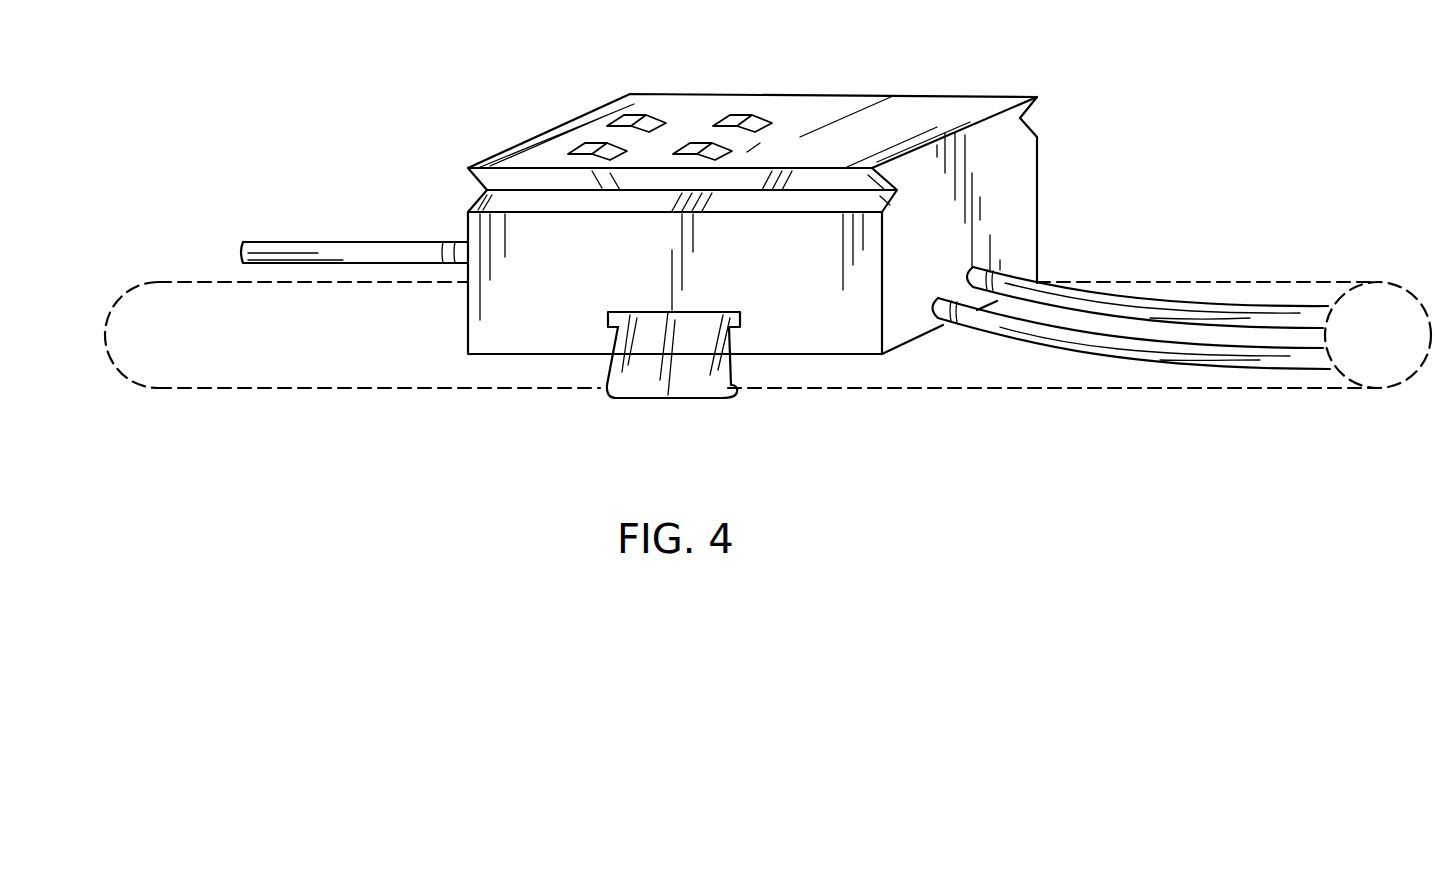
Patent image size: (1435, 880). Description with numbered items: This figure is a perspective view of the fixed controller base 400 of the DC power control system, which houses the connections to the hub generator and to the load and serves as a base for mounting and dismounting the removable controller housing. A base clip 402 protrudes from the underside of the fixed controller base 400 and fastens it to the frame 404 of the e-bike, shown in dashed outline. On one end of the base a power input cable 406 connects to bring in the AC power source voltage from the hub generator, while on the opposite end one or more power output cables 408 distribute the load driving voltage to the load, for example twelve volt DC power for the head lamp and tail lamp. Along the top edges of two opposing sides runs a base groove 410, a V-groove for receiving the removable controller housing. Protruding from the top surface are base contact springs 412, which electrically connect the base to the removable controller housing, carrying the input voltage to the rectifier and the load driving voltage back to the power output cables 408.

The fixed controller base 400 is at (938, 117).
The base clip 402 is at (675, 387).
The frame 404 is at (1002, 375).
The power input cable 406 is at (328, 258).
The power output cables 408 is at (1048, 347).
The base groove 410 is at (474, 186).
The base contact springs 412 is at (731, 119).